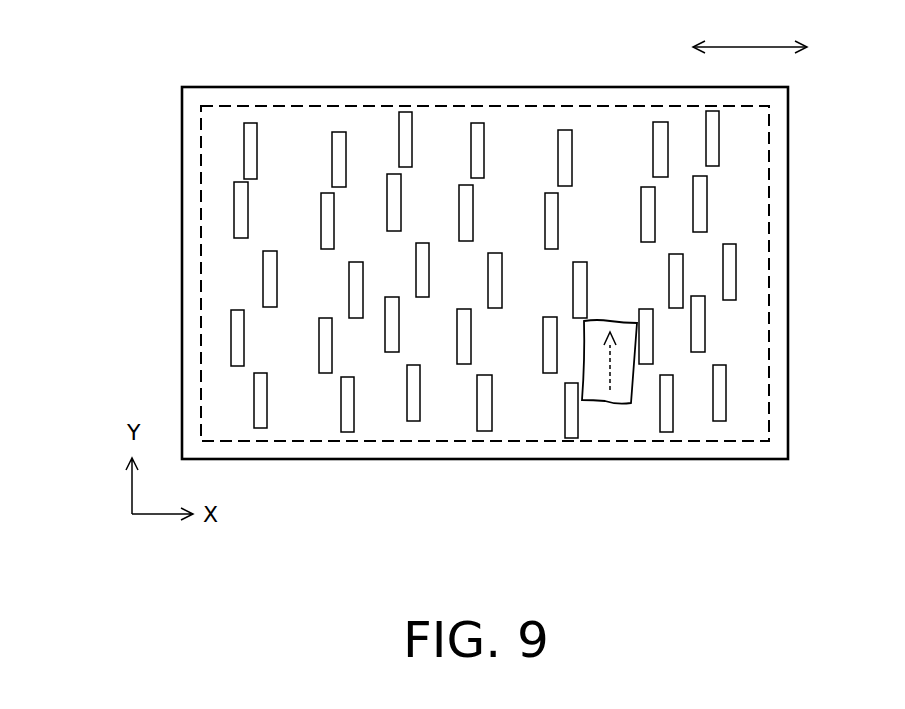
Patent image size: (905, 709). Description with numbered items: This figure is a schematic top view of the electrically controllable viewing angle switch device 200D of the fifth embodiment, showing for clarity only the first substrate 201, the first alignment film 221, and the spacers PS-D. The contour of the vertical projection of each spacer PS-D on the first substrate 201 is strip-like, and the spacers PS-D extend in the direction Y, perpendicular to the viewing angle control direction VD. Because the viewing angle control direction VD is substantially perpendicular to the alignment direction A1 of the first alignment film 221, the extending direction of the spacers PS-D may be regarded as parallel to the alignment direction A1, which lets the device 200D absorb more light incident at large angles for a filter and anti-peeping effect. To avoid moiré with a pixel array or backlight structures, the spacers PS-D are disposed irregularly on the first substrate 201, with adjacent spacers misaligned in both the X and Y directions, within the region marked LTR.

The first substrate 201 is at (788, 380).
The light transmitting region LTR is at (769, 143).
The spacer PS-D is at (471, 132).
The first alignment film 221 is at (598, 402).
The alignment direction A1 is at (610, 386).
The viewing angle control direction VD is at (750, 35).
The electrically controllable viewing angle switch device 200D is at (845, 516).